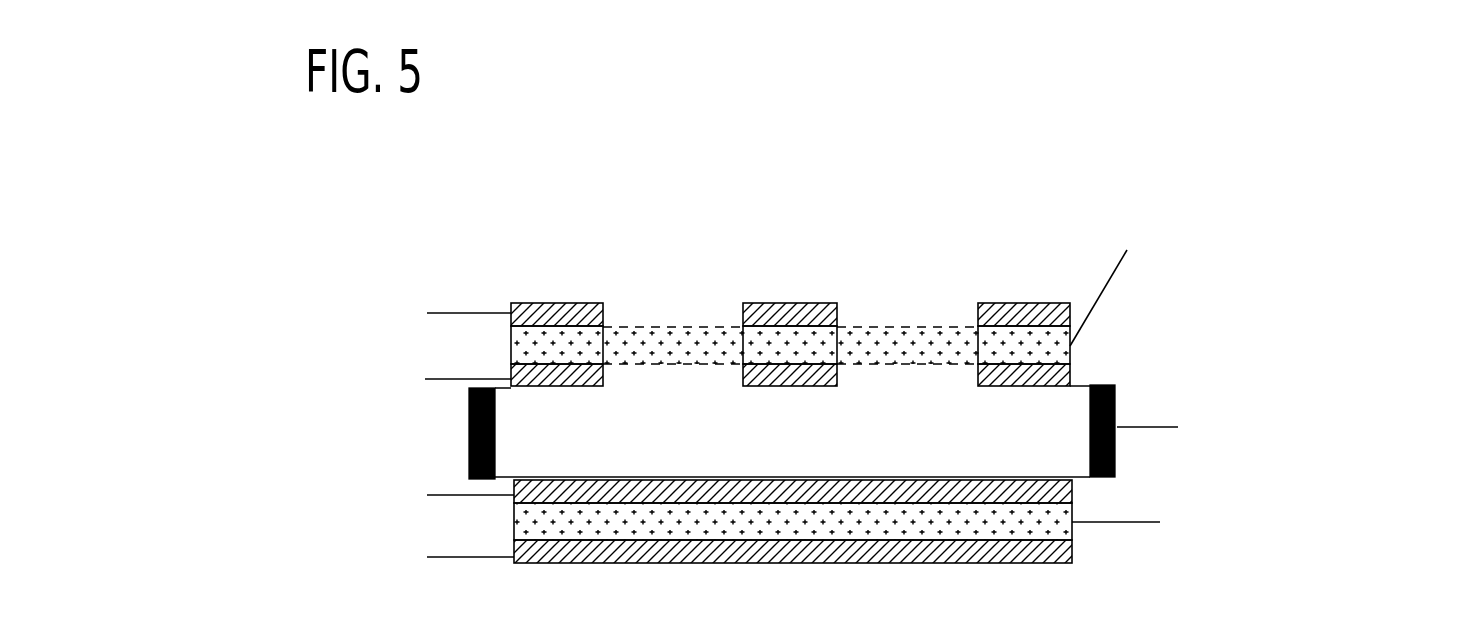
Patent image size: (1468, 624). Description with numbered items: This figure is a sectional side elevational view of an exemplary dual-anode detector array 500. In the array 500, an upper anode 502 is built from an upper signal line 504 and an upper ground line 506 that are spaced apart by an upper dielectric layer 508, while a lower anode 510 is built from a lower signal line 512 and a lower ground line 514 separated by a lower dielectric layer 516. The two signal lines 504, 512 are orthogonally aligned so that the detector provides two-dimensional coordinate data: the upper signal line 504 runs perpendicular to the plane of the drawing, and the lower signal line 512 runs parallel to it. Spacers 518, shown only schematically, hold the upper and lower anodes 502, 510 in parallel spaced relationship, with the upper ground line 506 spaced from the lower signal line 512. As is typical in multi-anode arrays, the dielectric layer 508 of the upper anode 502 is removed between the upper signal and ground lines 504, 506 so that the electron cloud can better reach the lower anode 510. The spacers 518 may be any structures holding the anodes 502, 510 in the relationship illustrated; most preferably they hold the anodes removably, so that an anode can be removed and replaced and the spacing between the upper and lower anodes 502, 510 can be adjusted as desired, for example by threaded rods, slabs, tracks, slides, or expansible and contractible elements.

The multi-anode detector array 500 is at (467, 260).
The upper anode 502 is at (217, 298).
The upper signal line 504 is at (568, 304).
The upper ground line 506 is at (605, 380).
The upper dielectric layer 508 is at (590, 348).
The lower anode 510 is at (200, 480).
The lower signal line 512 is at (613, 487).
The lower ground line 514 is at (690, 550).
The lower dielectric layer 516 is at (795, 522).
The spacers 518 is at (1117, 407).